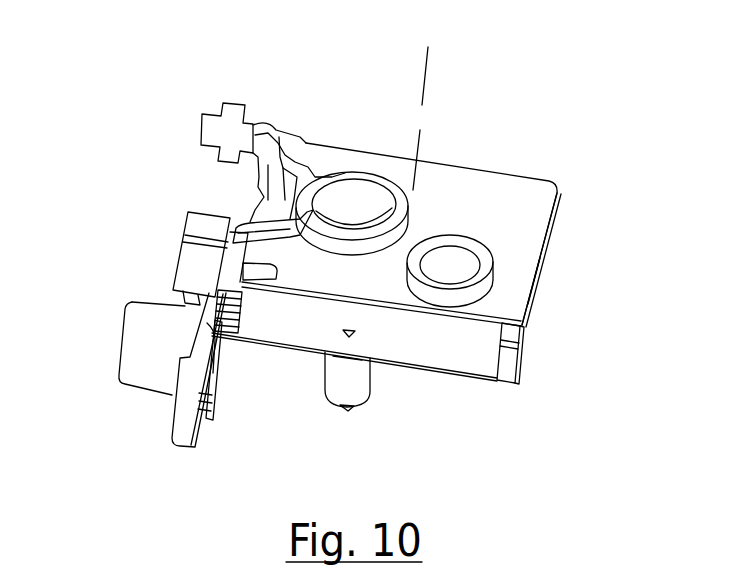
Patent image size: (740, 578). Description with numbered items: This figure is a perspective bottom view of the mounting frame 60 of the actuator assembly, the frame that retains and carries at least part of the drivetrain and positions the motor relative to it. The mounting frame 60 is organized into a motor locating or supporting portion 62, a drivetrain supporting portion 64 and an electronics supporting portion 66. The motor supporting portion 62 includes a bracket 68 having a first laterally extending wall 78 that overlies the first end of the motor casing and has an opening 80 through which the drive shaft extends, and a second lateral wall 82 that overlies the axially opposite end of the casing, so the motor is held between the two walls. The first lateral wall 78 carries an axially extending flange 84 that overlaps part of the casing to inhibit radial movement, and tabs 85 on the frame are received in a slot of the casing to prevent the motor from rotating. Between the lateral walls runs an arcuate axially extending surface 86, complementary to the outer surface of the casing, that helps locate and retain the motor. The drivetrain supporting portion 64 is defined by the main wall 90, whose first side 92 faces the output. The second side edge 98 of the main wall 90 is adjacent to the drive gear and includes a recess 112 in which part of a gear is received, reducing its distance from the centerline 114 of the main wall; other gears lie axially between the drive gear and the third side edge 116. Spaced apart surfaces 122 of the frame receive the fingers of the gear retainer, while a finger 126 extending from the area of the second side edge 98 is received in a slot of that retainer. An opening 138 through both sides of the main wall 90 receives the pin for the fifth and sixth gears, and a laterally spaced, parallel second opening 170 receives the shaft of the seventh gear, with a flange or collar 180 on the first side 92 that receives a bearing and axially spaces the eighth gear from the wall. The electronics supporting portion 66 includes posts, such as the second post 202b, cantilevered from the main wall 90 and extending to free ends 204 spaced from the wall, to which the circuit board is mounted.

The mounting frame 60 is at (610, 79).
The motor locating or supporting portion 62 is at (230, 429).
The drivetrain supporting portion 64 is at (437, 153).
The electronics supporting portion 66 is at (353, 420).
The bracket 68 is at (168, 452).
The first laterally extending wall 78 is at (197, 328).
The opening 80 is at (207, 350).
The second lateral wall 82 is at (508, 367).
The axially extending flange 84 is at (198, 437).
The tabs 85 is at (240, 292).
The axially extending surface 86 is at (462, 357).
The main wall 90 is at (567, 196).
The first side 92 is at (537, 227).
The second side edge 98 is at (256, 138).
The recess 112 is at (284, 178).
The centerline 114 is at (428, 75).
The third side edge 116 is at (547, 270).
The spaced apart surfaces 122 is at (197, 237).
The finger 126 is at (212, 135).
The opening 138 is at (350, 218).
The second opening 170 is at (450, 267).
The flange or collar 180 is at (488, 247).
The second post 202b is at (358, 377).
The free ends 204 is at (345, 398).